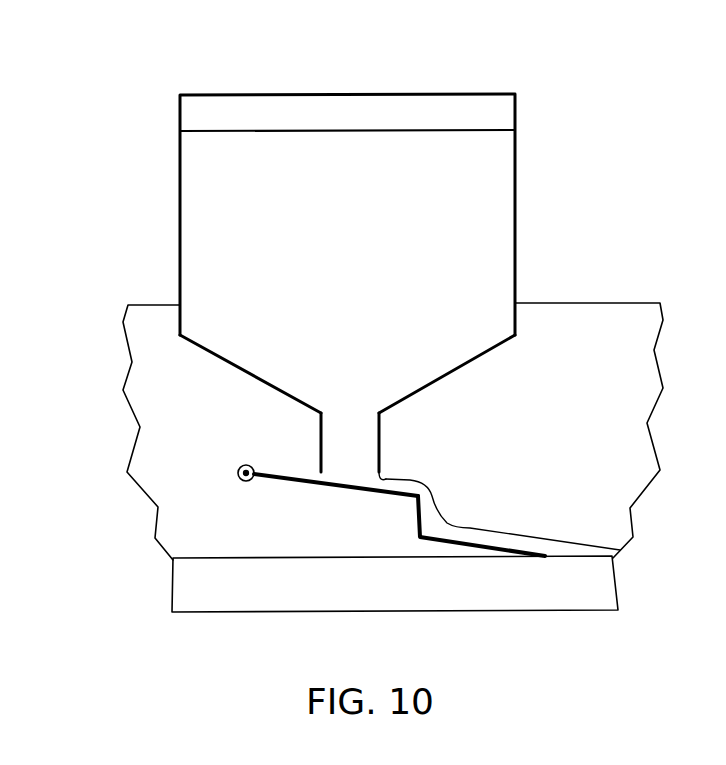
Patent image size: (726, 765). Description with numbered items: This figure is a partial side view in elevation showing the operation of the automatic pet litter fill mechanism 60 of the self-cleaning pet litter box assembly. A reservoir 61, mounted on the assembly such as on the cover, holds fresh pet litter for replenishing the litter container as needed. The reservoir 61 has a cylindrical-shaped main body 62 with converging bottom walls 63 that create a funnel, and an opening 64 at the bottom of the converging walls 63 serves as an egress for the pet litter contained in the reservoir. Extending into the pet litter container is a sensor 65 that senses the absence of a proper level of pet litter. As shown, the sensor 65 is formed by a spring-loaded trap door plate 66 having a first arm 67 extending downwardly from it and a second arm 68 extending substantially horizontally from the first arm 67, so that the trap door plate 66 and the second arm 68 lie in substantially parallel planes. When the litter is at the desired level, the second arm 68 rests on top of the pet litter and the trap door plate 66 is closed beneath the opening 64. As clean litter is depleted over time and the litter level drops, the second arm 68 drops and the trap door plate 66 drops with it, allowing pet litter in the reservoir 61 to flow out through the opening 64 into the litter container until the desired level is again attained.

The automatic pet litter fill mechanism 60 is at (311, 259).
The reservoir 61 is at (260, 103).
The main body 62 is at (518, 195).
The converging bottom walls 63 is at (202, 352).
The opening 64 is at (381, 477).
The sensor 65 is at (368, 515).
The spring-loaded trap door plate 66 is at (278, 470).
The first arm 67 is at (447, 526).
The second arm 68 is at (512, 538).